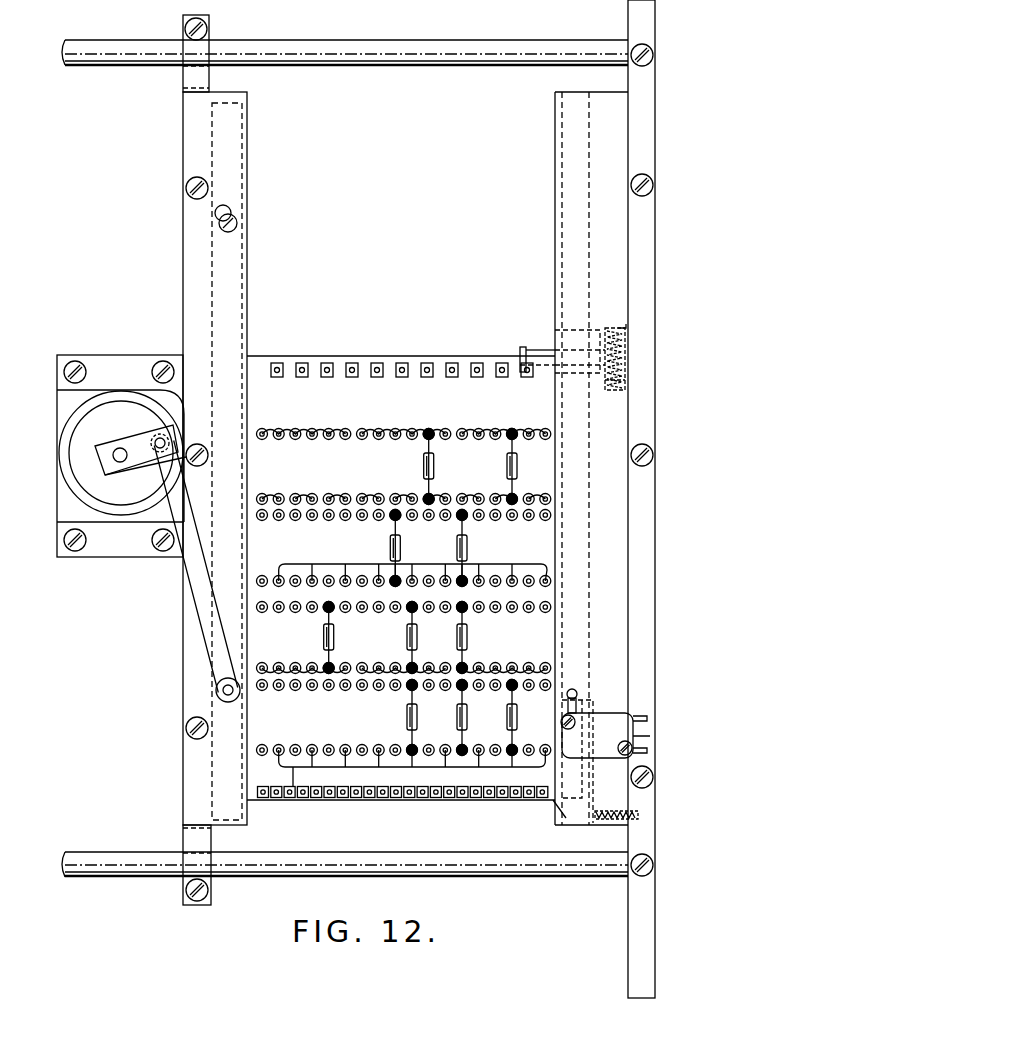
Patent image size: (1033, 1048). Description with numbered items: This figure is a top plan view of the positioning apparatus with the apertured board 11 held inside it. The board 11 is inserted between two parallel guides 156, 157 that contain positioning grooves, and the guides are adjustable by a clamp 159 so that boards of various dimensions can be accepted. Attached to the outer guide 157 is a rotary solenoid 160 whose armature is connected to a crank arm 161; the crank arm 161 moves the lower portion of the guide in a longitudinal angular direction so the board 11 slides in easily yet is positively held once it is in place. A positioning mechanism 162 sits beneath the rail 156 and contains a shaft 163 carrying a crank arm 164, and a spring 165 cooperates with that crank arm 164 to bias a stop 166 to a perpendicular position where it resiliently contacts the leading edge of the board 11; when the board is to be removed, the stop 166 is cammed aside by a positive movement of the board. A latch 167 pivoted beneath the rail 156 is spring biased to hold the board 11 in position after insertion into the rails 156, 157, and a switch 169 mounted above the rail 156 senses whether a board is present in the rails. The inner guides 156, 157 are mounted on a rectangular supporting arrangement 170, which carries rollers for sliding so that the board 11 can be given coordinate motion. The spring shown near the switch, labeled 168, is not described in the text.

The board 11 is at (318, 356).
The guide 156 is at (555, 268).
The outer guide 157 is at (242, 157).
The clamp 159 is at (183, 840).
The rotary solenoid 160 is at (75, 441).
The crank arm 161 is at (118, 474).
The positioning mechanism 162 is at (598, 328).
The shaft 163 is at (540, 350).
The crank arm 164 is at (626, 386).
The spring 165 is at (626, 372).
The stop 166 is at (520, 350).
The latch 167 is at (592, 706).
The return spring 168 is at (638, 812).
The switch 169 is at (650, 736).
The supporting arrangement 170 is at (655, 830).